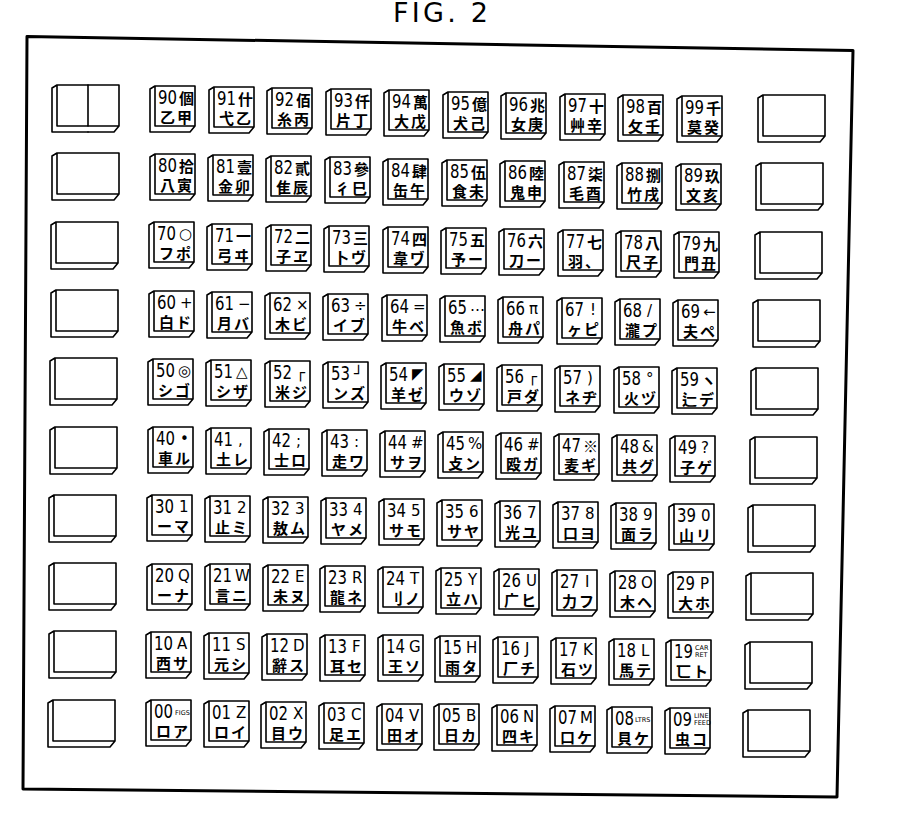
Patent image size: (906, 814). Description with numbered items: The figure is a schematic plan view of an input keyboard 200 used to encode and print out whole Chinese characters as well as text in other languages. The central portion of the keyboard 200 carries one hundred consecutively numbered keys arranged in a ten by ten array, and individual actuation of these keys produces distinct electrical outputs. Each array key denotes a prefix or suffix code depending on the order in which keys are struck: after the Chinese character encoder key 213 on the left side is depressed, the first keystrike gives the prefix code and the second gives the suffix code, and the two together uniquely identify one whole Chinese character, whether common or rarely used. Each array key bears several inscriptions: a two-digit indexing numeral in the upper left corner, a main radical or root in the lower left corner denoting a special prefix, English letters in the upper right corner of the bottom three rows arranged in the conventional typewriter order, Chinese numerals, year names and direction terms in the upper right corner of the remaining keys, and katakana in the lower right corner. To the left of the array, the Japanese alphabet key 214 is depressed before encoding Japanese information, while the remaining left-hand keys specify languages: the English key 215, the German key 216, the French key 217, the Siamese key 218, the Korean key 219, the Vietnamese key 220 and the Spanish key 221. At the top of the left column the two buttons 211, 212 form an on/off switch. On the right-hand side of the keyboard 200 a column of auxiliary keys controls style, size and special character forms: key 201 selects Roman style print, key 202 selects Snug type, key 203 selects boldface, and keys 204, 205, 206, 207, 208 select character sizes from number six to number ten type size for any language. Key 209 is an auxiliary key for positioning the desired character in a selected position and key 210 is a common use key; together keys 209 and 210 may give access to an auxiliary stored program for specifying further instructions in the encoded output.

The keyboard 200 is at (780, 48).
The Roman style print key 201 is at (795, 91).
The Snug type key 202 is at (793, 159).
The boldface key 203 is at (792, 228).
The character size key 204 is at (790, 296).
The character size key 205 is at (788, 364).
The character size key 206 is at (787, 433).
The character size key 207 is at (785, 501).
The character size key 208 is at (783, 569).
The positioning auxiliary key 209 is at (782, 638).
The common use key 210 is at (780, 706).
The on/off switch button 211 is at (72, 81).
The on/off switch button 212 is at (104, 81).
The Chinese character encoder key 213 is at (89, 149).
The Japanese alphabet key 214 is at (88, 218).
The English language key 215 is at (88, 286).
The German language key 216 is at (87, 354).
The French language key 217 is at (87, 423).
The Siamese language key 218 is at (86, 491).
The Korean language key 219 is at (86, 559).
The Vietnamese language key 220 is at (86, 627).
The Spanish language key 221 is at (85, 696).